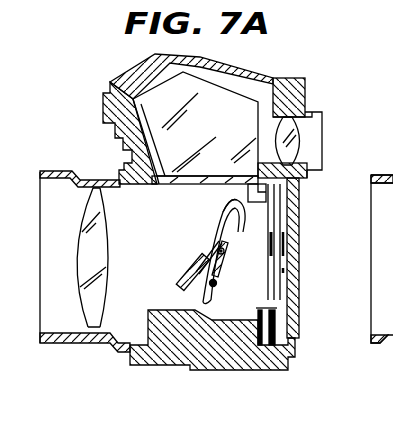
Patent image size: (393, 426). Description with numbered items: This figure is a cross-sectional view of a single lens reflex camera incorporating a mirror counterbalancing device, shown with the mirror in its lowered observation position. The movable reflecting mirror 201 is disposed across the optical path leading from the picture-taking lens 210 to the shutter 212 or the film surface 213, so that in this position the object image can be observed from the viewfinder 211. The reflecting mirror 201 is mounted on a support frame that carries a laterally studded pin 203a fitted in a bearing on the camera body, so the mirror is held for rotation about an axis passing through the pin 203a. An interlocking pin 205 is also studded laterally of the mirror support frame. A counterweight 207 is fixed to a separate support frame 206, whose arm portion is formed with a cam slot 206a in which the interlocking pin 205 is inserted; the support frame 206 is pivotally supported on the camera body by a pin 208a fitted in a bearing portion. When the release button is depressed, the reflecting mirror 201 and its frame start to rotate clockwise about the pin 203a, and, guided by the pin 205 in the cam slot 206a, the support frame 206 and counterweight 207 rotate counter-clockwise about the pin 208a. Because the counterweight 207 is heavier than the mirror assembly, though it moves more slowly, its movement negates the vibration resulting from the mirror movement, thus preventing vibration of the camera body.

The movable reflecting mirror 201 is at (201, 268).
The pin 203a is at (277, 224).
The interlocking pin 205 is at (214, 244).
The support frame 206 is at (217, 283).
The cam slot 206a is at (224, 221).
The counterweight 207 is at (190, 301).
The pin 208a is at (186, 279).
The picture-taking lens 210 is at (92, 312).
The viewfinder 211 is at (323, 134).
The shutter 212 is at (270, 286).
The film surface 213 is at (289, 234).